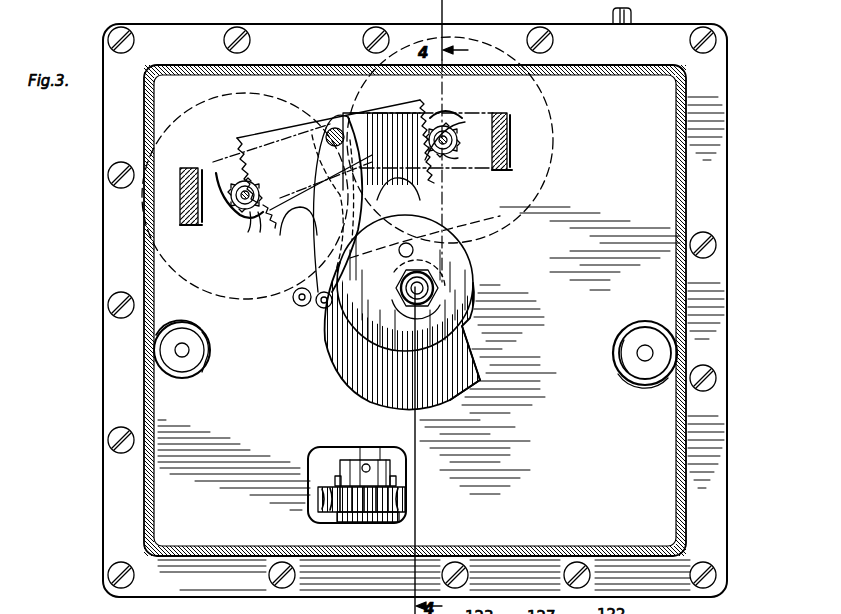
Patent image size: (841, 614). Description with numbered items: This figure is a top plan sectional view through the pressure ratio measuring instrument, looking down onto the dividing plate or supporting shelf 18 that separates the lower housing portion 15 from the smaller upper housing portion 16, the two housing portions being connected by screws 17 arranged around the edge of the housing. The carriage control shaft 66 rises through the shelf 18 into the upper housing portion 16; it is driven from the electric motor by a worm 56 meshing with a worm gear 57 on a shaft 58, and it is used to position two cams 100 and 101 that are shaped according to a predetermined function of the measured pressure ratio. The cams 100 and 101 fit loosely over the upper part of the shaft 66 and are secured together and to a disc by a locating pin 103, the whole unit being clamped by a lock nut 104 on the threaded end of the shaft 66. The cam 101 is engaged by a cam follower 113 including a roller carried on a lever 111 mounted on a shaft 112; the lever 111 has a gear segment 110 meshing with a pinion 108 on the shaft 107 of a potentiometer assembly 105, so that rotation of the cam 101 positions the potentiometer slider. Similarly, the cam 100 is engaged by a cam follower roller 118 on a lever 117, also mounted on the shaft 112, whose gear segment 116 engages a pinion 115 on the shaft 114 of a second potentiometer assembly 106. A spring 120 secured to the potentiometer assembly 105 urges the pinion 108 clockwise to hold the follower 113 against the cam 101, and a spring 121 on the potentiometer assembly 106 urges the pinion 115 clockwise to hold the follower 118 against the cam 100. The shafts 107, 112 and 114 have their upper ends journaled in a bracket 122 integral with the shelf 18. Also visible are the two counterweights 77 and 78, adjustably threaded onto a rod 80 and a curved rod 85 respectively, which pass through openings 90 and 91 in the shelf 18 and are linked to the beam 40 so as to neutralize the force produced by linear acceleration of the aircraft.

The lower housing portion 15 is at (727, 169).
The upper housing portion 16 is at (677, 425).
The screws 17 is at (716, 35).
The dividing plate or supporting shelf 18 is at (532, 379).
The beam 40 is at (206, 352).
The worm 56 is at (398, 518).
The worm gear 57 is at (398, 491).
The shaft 58 is at (368, 446).
The carriage control shaft 66 is at (413, 291).
The counterweight 77 is at (192, 330).
The counterweight 78 is at (630, 340).
The rod 80 is at (182, 358).
The rod 85 is at (650, 344).
The opening 90 is at (180, 322).
The opening 91 is at (636, 387).
The cam 100 is at (352, 371).
The cam 101 is at (470, 329).
The locating pin 103 is at (400, 249).
The lock nut 104 is at (440, 280).
The potentiometer assembly 105 is at (202, 109).
The potentiometer assembly 106 is at (550, 131).
The shaft 107 is at (246, 221).
The pinion 108 is at (256, 219).
The gear segment 110 is at (236, 139).
The lever 111 is at (290, 127).
The shaft 112 is at (338, 129).
The cam follower 113 is at (320, 311).
The shaft 114 is at (458, 123).
The pinion 115 is at (452, 161).
The gear segment 116 is at (430, 103).
The lever 117 is at (390, 127).
The cam follower roller 118 is at (294, 305).
The spring 120 is at (222, 229).
The spring 121 is at (458, 105).
The bracket 122 is at (512, 119).